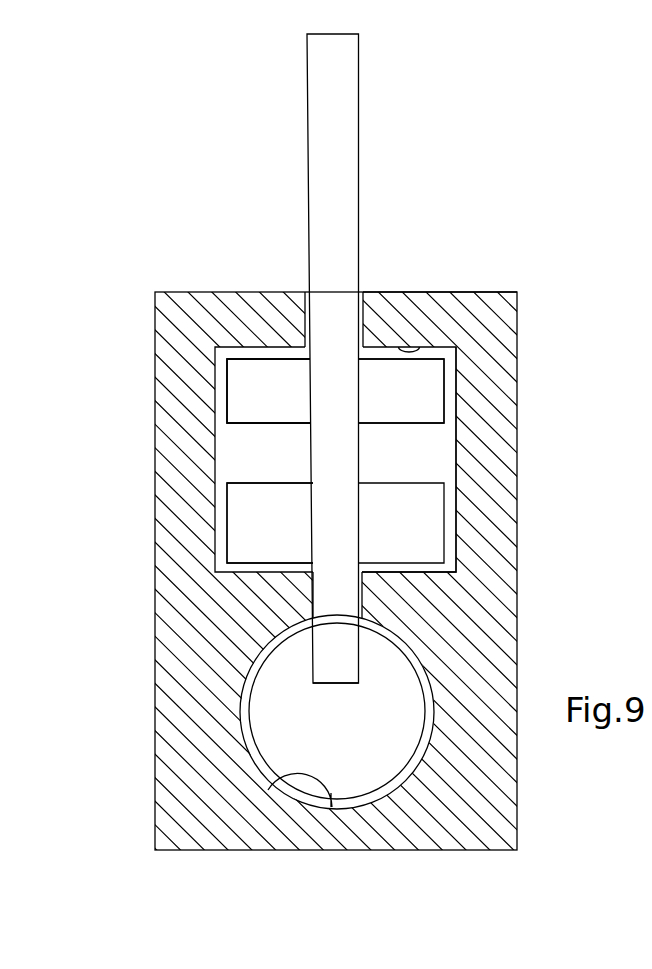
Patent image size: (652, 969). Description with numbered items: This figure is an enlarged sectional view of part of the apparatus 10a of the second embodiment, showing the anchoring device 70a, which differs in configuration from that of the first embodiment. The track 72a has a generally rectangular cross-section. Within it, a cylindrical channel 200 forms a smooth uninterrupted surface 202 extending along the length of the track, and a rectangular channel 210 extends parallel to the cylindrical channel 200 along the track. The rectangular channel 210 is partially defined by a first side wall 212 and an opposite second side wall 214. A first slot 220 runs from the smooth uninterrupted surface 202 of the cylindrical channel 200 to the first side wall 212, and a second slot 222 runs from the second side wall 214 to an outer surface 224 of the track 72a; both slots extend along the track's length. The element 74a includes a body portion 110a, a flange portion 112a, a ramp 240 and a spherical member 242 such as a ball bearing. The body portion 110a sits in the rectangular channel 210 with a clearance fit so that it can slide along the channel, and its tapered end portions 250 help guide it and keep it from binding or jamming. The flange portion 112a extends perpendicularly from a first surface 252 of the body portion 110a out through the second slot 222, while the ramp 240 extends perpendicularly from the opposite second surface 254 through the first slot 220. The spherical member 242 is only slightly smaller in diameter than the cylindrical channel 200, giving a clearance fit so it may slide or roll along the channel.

The apparatus 10a is at (152, 95).
The anchoring device 70a is at (168, 208).
The flange portion 112a is at (333, 195).
The first surface 252 is at (263, 358).
The second slot 222 is at (365, 308).
The second side wall 214 is at (418, 347).
The outer surface 224 is at (480, 290).
The track 72a is at (483, 335).
The body portion 110a is at (263, 393).
The element 74a is at (410, 398).
The tapered end portions 250 is at (420, 455).
The rectangular channel 210 is at (222, 498).
The second surface 254 is at (262, 564).
The first side wall 212 is at (410, 572).
The first slot 220 is at (362, 598).
The ramp 240 is at (337, 646).
The spherical member 242 is at (300, 712).
The smooth uninterrupted surface 202 is at (270, 785).
The cylindrical channel 200 is at (415, 763).